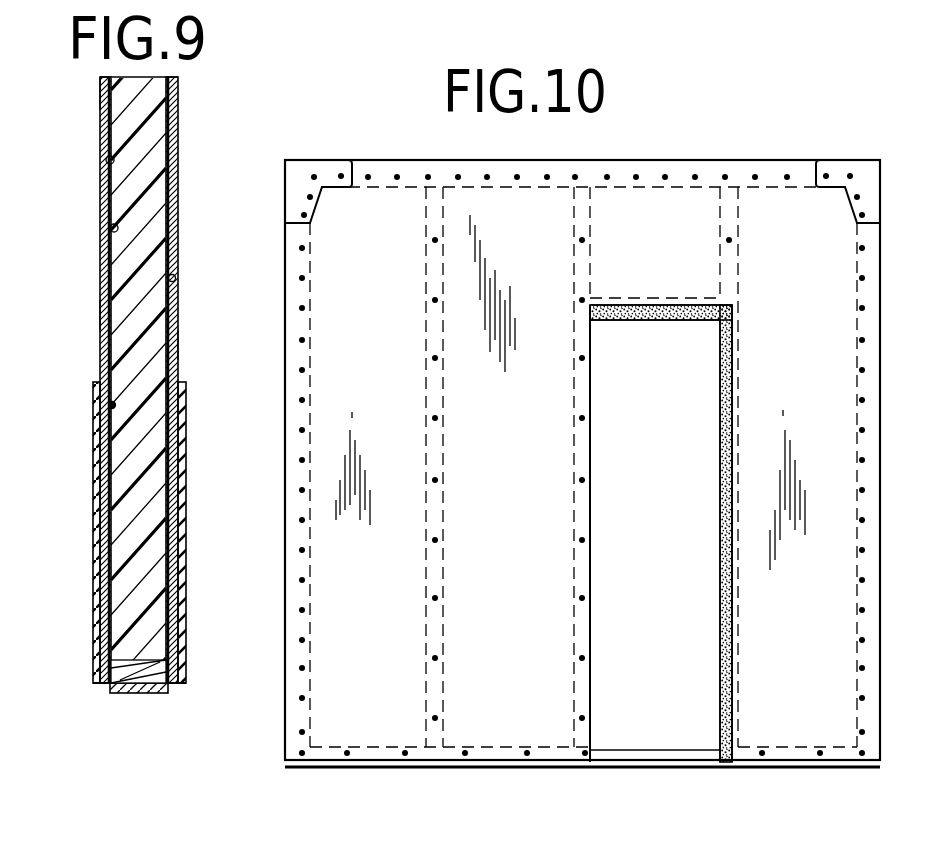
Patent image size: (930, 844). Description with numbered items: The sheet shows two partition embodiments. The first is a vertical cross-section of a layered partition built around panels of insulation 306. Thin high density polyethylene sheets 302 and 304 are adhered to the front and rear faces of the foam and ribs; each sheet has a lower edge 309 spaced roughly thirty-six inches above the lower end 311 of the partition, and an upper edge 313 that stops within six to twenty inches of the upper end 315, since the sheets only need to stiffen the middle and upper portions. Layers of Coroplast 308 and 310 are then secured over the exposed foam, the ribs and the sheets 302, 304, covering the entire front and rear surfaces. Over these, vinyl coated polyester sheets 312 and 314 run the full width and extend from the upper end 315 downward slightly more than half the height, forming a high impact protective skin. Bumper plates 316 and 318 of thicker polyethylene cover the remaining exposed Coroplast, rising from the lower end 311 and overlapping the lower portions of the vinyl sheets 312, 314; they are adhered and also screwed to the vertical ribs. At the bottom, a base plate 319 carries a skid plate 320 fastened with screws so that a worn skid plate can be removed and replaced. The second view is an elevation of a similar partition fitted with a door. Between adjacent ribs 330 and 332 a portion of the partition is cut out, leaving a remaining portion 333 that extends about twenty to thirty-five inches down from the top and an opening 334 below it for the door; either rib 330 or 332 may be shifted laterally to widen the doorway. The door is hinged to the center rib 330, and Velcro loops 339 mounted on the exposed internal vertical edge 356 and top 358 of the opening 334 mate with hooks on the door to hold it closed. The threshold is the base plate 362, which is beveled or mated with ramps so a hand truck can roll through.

In FIG. 9, the sheet 302 is at (107, 240).
In FIG. 9, the sheet 304 is at (176, 282).
In FIG. 9, the panels of insulation 306 is at (145, 86).
In FIG. 9, the layer of Coroplast 308 is at (101, 120).
In FIG. 9, the lower edge 309 is at (108, 404).
In FIG. 9, the layer of Coroplast 310 is at (178, 158).
In FIG. 9, the lower end 311 is at (105, 690).
In FIG. 9, the vinyl coated polyester sheet 312 is at (100, 302).
In FIG. 9, the upper edge 313 is at (108, 168).
In FIG. 9, the vinyl coated polyester sheet 314 is at (178, 342).
In FIG. 9, the upper end 315 is at (100, 72).
In FIG. 9, the bumper plate 316 is at (94, 546).
In FIG. 9, the bumper plate 318 is at (186, 546).
In FIG. 9, the base plate 319 is at (162, 686).
In FIG. 9, the skid plate 320 is at (140, 694).
In FIG. 10, the rib 330 is at (583, 745).
In FIG. 10, the rib 332 is at (733, 745).
In FIG. 10, the remaining portion 333 is at (652, 200).
In FIG. 10, the opening 334 is at (608, 380).
In FIG. 10, the Velcro loops 339 is at (660, 322).
In FIG. 10, the exposed internal vertical edge 356 is at (732, 400).
In FIG. 10, the top of the opening 358 is at (626, 304).
In FIG. 10, the base plate 362 is at (683, 755).